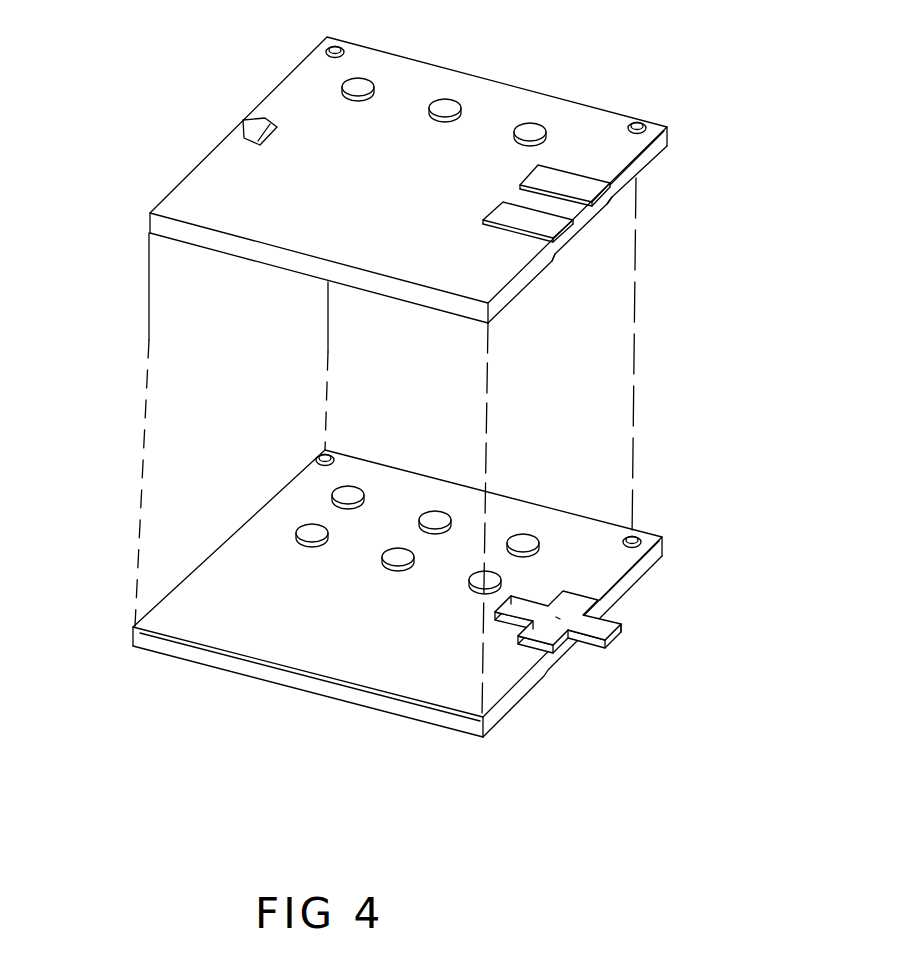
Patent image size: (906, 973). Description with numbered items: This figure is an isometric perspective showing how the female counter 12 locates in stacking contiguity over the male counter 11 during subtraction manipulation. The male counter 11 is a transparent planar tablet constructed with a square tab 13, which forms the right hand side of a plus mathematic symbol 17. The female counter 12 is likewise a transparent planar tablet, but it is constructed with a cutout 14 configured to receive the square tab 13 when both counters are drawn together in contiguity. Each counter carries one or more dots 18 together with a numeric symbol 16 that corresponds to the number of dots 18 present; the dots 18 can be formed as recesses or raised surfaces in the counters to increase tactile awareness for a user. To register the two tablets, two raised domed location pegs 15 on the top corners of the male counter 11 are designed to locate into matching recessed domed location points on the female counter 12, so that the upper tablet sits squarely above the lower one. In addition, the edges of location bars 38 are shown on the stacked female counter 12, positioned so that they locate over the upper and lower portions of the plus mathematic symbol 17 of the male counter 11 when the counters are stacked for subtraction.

The male counter 11 is at (415, 627).
The female counter 12 is at (460, 180).
The square tab 13 is at (608, 698).
The cutout 14 is at (243, 127).
The raised domed location pegs 15 is at (344, 43).
The numeric symbol 16 is at (162, 603).
The plus mathematic symbol 17 is at (553, 632).
The dots 18 is at (467, 95).
The location bars 38 is at (571, 252).